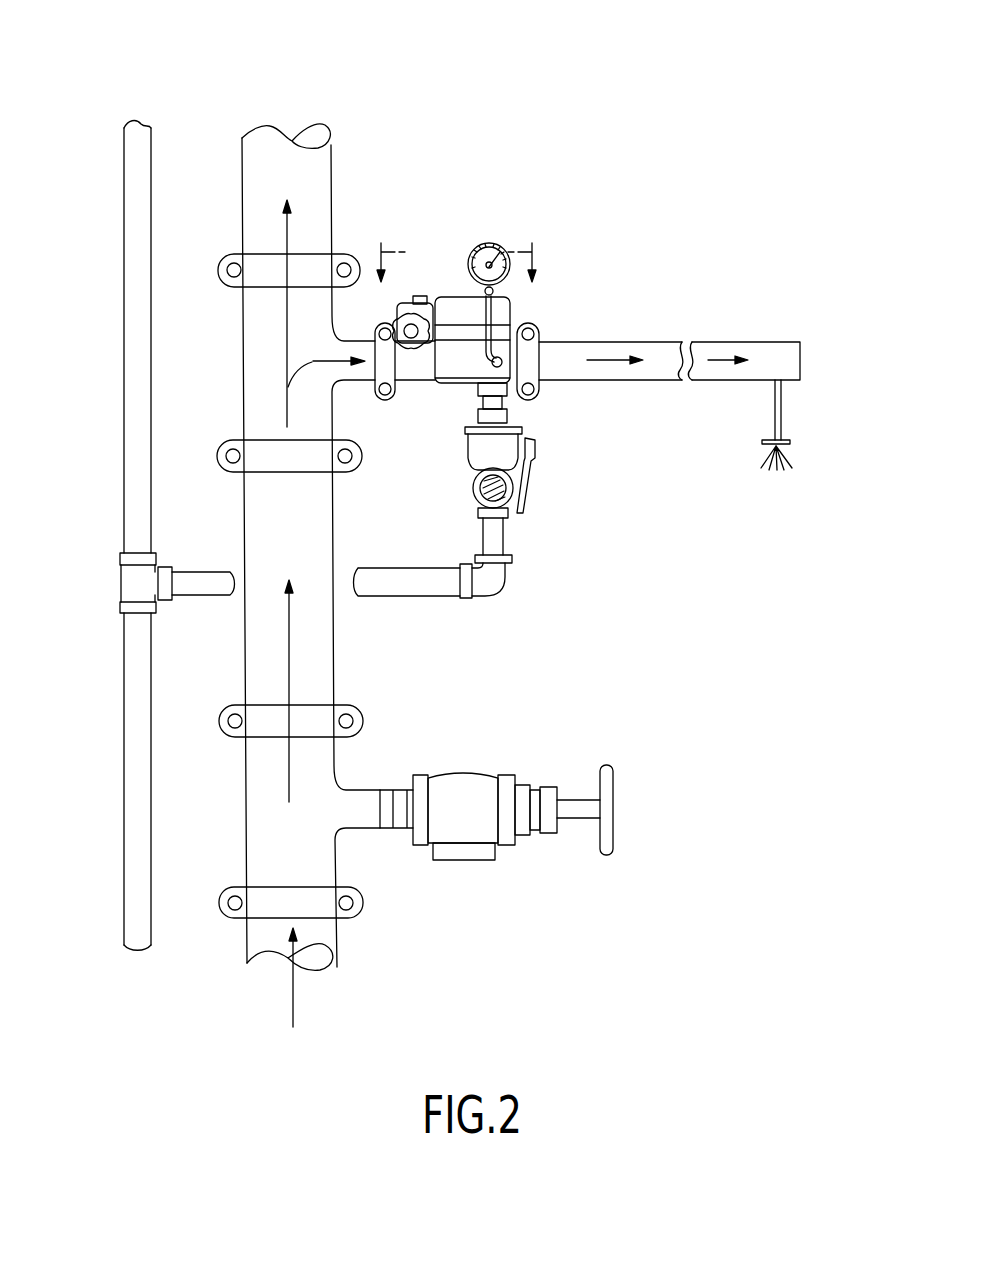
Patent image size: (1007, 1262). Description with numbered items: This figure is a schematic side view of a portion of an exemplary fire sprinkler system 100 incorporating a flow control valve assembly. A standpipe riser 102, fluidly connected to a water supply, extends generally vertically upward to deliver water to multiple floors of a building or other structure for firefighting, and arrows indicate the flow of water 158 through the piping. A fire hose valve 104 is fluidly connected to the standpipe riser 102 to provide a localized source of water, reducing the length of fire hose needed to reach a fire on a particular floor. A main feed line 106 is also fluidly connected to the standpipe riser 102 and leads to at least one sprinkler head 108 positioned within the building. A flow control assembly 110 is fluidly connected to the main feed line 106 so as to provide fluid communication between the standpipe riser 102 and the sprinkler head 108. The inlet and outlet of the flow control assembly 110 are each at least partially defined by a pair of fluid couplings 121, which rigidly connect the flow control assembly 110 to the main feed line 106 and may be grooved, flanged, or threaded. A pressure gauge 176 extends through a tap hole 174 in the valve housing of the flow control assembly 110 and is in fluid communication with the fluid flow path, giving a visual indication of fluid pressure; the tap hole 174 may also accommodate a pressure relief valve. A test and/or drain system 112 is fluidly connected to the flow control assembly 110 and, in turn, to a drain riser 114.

The fire sprinkler system 100 is at (668, 67).
The standpipe riser 102 is at (340, 762).
The fire hose valve 104 is at (500, 768).
The main feed line 106 is at (668, 340).
The sprinkler head 108 is at (790, 443).
The flow control assembly 110 is at (437, 268).
The test and/or drain system 112 is at (552, 498).
The drain riser 114 is at (125, 713).
The fluid couplings 121 is at (530, 345).
The water 158 is at (312, 361).
The tap hole 174 is at (500, 382).
The pressure gauge 176 is at (494, 245).